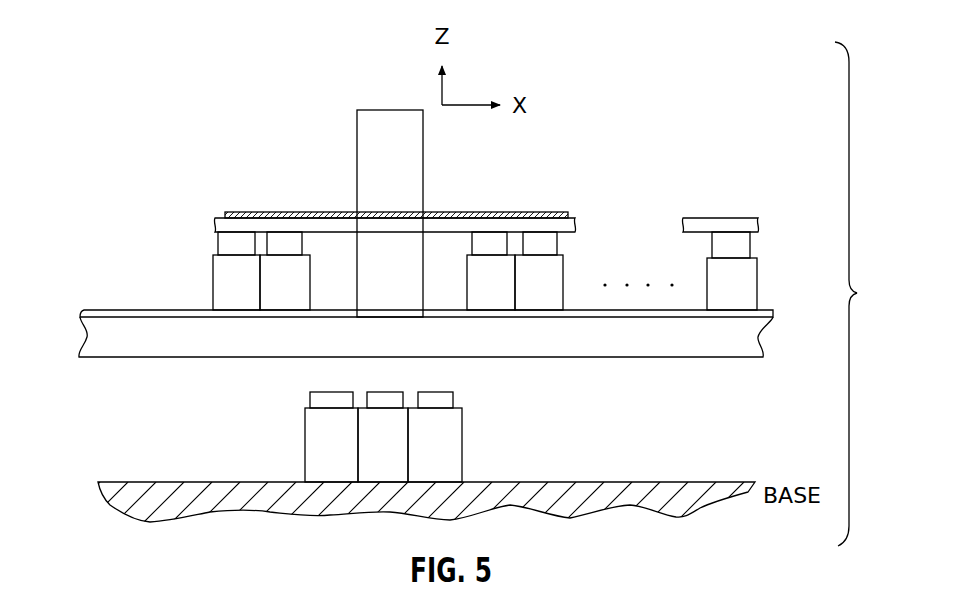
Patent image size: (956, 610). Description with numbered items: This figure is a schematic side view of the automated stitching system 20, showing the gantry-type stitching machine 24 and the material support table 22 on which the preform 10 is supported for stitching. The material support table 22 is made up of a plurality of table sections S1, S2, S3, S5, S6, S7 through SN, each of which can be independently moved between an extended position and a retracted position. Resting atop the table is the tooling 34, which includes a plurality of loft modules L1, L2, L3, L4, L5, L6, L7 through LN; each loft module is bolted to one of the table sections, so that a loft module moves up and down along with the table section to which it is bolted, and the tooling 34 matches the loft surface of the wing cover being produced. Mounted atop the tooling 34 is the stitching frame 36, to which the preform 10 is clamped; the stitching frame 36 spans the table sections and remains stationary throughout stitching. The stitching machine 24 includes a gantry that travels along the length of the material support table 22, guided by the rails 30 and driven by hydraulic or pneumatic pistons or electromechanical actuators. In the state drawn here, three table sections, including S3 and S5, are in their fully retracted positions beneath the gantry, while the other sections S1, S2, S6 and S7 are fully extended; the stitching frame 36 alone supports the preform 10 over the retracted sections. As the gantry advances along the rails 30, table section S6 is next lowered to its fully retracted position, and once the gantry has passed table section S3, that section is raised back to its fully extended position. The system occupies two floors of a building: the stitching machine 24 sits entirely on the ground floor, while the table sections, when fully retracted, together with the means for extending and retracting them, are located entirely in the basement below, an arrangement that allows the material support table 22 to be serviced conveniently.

The preform 10 is at (520, 210).
The automated stitching system 20 is at (199, 178).
The material support table 22 is at (207, 290).
The stitching machine 24 is at (352, 134).
The rails 30 is at (108, 308).
The tooling 34 is at (755, 248).
The stitching frame 36 is at (700, 218).
The loft module L1 is at (228, 243).
The loft module L2 is at (300, 243).
The loft module L3 is at (318, 400).
The loft module L4 is at (392, 398).
The loft module L5 is at (445, 398).
The loft module L6 is at (488, 243).
The loft module L7 is at (555, 243).
The loft module LN is at (720, 243).
The table section S1 is at (236, 282).
The table section S2 is at (285, 282).
The table section S3 is at (331, 445).
The table section S5 is at (410, 445).
The table section S6 is at (491, 282).
The table section S7 is at (539, 282).
The table section SN is at (732, 285).